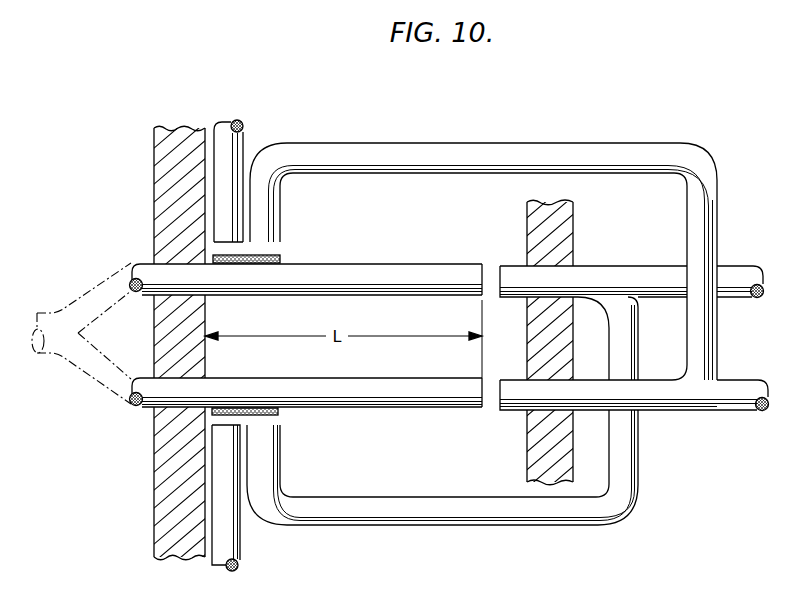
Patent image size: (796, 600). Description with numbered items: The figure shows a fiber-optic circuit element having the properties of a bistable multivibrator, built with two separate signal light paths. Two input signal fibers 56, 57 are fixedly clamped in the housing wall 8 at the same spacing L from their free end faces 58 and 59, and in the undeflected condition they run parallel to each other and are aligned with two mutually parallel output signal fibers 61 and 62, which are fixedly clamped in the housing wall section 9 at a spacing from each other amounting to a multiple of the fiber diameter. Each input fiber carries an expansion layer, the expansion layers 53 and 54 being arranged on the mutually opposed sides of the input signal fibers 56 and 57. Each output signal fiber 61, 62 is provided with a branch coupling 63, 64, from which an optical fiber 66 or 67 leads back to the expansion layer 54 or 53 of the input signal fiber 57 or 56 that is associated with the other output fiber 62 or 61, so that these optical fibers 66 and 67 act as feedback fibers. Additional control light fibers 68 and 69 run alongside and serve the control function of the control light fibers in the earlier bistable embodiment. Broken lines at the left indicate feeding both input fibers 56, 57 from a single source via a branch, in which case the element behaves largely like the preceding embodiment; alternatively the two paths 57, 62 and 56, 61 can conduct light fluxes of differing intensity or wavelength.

The housing wall 8 is at (168, 165).
The housing wall section 9 is at (567, 223).
The expansion layer 53 is at (277, 413).
The expansion layer 54 is at (280, 258).
The input signal fiber 56 is at (350, 393).
The input signal fiber 57 is at (388, 277).
The free end face 58 is at (482, 402).
The free end face 59 is at (483, 277).
The output signal fiber 61 is at (732, 394).
The output signal fiber 62 is at (740, 279).
The branch coupling 63 is at (688, 378).
The branch coupling 64 is at (609, 281).
The optical fiber 66 is at (478, 154).
The optical fiber 67 is at (410, 513).
The control light fiber 68 is at (233, 542).
The control light fiber 69 is at (232, 146).